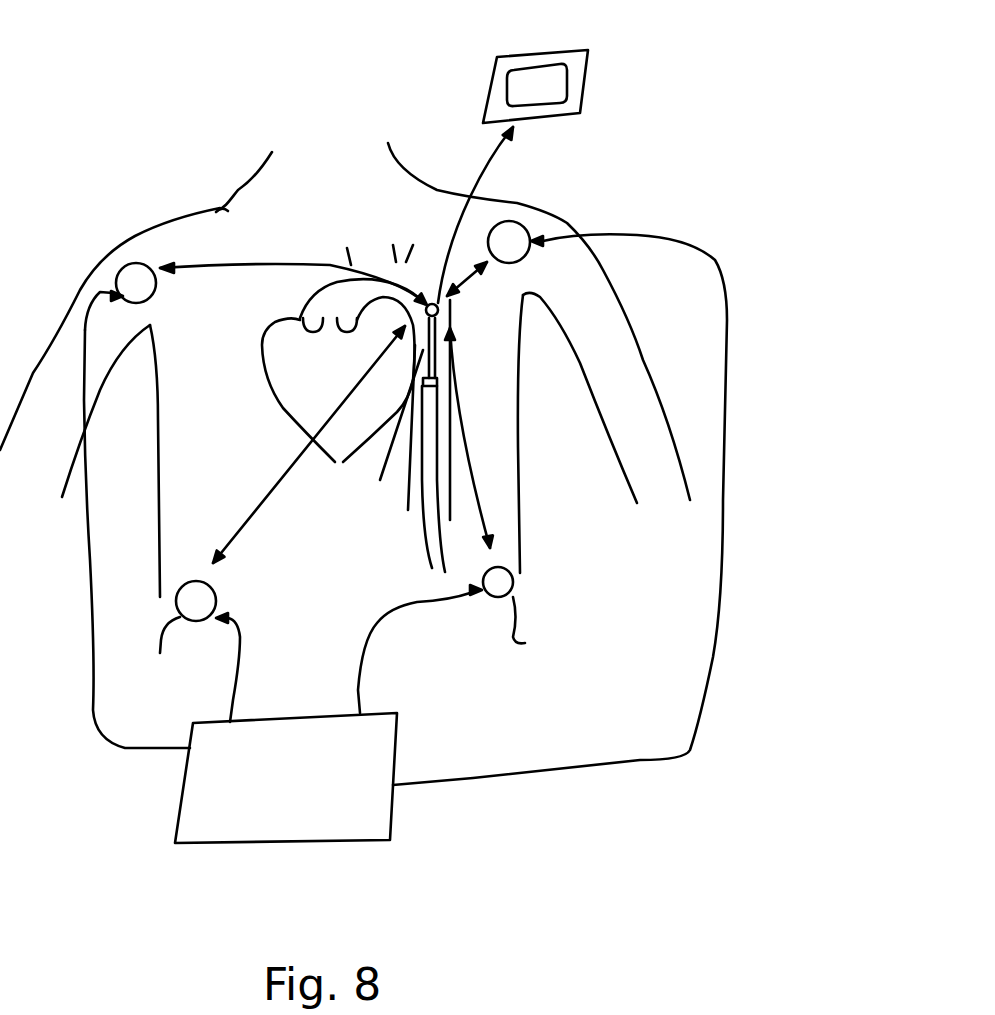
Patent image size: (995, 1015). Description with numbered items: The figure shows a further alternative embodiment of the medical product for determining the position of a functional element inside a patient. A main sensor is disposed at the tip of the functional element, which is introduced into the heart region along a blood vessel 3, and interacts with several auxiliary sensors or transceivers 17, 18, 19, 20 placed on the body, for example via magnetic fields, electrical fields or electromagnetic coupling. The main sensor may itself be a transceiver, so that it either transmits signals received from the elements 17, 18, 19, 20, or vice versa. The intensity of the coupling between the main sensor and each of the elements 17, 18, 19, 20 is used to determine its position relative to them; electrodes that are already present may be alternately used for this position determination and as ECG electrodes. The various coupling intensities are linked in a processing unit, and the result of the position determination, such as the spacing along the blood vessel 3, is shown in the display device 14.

The blood vessel 3 is at (450, 475).
The display device 14 is at (587, 80).
The auxiliary sensor or transceiver 17 is at (132, 272).
The auxiliary sensor or transceiver 18 is at (513, 225).
The auxiliary sensor or transceiver 19 is at (182, 642).
The auxiliary sensor or transceiver 20 is at (527, 613).